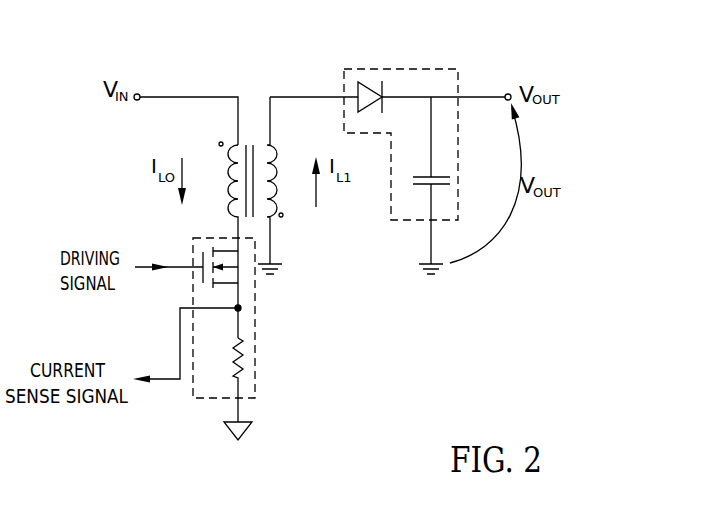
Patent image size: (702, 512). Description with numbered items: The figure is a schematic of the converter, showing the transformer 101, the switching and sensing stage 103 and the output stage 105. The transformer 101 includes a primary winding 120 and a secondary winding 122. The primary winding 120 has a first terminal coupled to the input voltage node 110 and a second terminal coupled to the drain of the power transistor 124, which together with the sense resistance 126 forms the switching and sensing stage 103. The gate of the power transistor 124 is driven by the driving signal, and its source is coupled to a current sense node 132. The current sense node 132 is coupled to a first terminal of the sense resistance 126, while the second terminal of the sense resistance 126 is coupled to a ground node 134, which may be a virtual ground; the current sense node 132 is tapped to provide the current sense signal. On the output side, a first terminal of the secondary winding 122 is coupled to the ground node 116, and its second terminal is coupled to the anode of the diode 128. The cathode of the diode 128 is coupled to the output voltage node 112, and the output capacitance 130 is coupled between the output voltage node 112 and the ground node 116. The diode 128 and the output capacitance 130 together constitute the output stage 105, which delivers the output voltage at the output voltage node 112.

The transformer 101 is at (247, 143).
The switching and sensing stage 103 is at (220, 317).
The output stage 105 is at (420, 142).
The input voltage node 110 is at (140, 94).
The output voltage node 112 is at (506, 93).
The ground node 116 is at (272, 262).
The primary winding 120 is at (228, 165).
The secondary winding 122 is at (263, 172).
The power transistor 124 is at (237, 248).
The sense resistance 126 is at (242, 350).
The diode 128 is at (370, 82).
The output capacitance 130 is at (440, 175).
The current sense node 132 is at (240, 309).
The ground node 134 is at (228, 420).